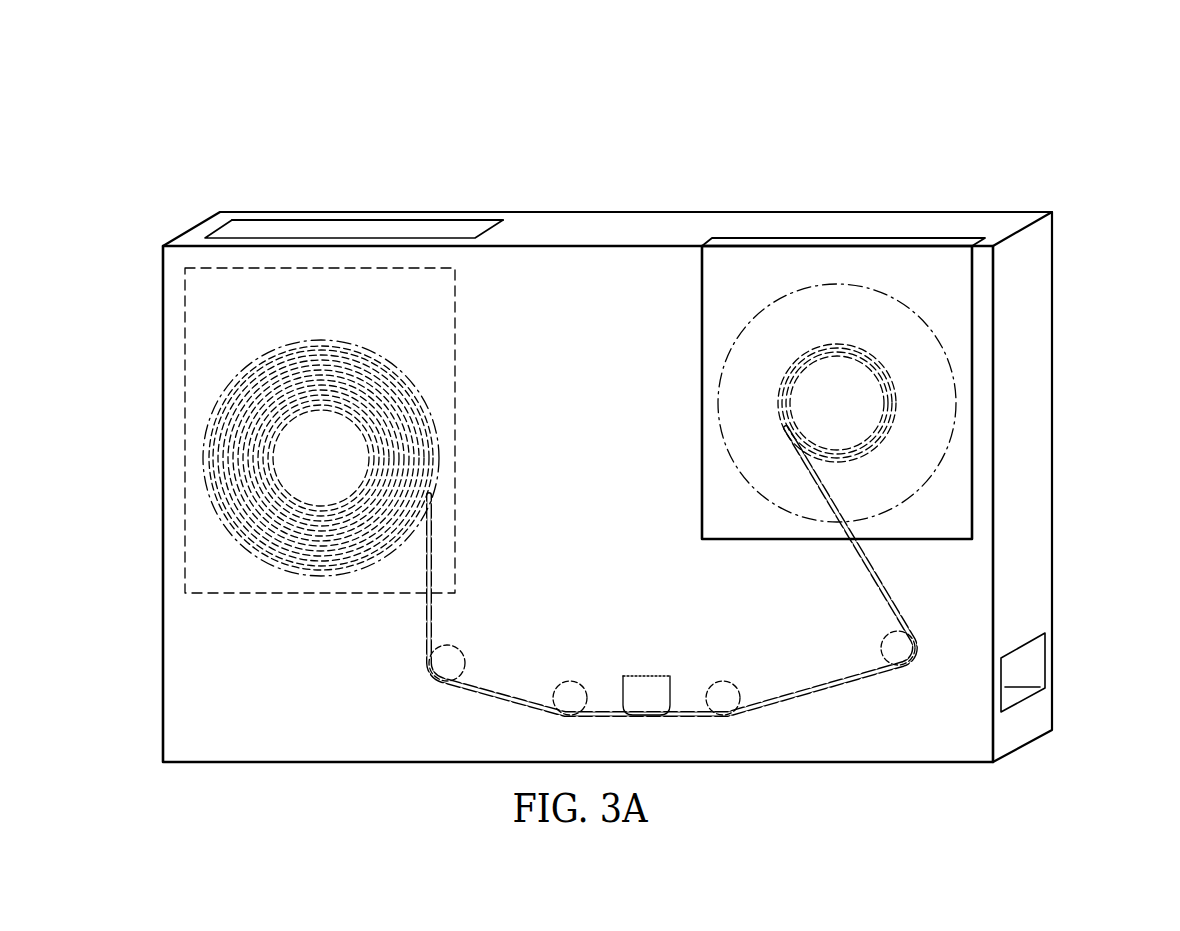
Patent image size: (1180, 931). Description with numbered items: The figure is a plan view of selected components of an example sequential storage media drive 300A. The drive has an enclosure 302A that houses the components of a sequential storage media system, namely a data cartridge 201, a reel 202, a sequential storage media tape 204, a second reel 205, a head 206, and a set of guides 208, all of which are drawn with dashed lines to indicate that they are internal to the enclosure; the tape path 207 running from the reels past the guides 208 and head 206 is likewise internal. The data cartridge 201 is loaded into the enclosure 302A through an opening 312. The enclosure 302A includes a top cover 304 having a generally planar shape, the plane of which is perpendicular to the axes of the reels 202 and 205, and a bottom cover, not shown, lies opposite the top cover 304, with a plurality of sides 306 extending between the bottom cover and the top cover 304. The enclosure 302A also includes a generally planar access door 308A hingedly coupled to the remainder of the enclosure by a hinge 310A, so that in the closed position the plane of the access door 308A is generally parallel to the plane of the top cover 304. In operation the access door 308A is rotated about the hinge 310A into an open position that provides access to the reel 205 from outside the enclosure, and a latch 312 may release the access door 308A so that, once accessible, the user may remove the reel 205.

The sequential storage media drive 300A is at (607, 411).
The data cartridge 201 is at (458, 323).
The reel 202 is at (368, 464).
The sequential storage media tape 204 is at (320, 345).
The reel 205 is at (885, 410).
The head 206 is at (648, 680).
The tape path 207 is at (672, 571).
The guides 208 is at (438, 670).
The enclosure 302A is at (393, 212).
The top cover 304 is at (172, 650).
The sides 306 is at (612, 220).
The access door 308A is at (702, 400).
The hinge 310A is at (852, 243).
The opening 312 is at (287, 228).